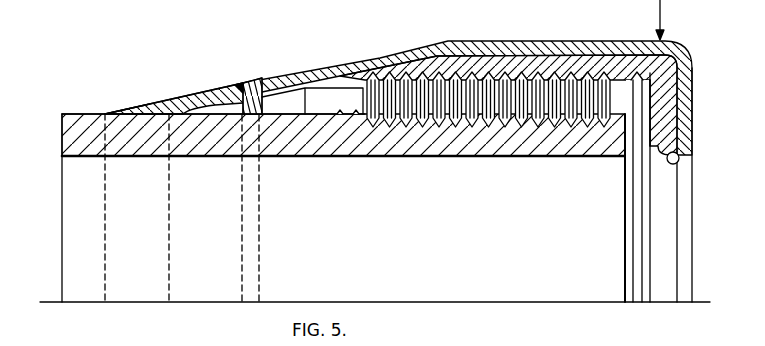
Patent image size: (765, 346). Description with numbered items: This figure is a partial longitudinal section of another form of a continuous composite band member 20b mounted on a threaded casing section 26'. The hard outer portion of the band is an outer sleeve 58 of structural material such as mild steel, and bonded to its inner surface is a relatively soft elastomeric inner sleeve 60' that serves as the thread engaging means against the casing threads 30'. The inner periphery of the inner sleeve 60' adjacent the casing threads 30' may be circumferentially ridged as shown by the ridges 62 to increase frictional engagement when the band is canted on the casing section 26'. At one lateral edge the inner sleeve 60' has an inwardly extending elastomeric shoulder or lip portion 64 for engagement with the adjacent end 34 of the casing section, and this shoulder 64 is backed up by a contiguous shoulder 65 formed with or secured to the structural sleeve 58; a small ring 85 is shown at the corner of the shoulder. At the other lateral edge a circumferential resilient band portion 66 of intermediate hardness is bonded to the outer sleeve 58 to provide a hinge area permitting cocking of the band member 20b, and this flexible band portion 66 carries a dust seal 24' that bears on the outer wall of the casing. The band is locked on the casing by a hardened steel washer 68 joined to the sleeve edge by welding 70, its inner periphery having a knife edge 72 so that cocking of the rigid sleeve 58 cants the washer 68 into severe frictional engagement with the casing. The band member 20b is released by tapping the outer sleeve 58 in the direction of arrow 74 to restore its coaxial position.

The dust seal 24' is at (129, 95).
The resilient band portion 66 is at (200, 100).
The washer 68 is at (233, 89).
The welding 70 is at (257, 85).
The knife edge 72 is at (242, 118).
The ridges 62 is at (420, 64).
The inner sleeve 60' is at (488, 69).
The composite band member 20b is at (538, 52).
The outer sleeve 58 is at (580, 47).
The arrow 74 is at (662, 19).
The shoulder 65 is at (680, 107).
The sealing ring 85 is at (679, 162).
The shoulder or lip portion 64 is at (663, 138).
The adjacent end of casing section 34 is at (627, 253).
The casing threads 30' is at (488, 148).
The casing section 26' is at (343, 206).